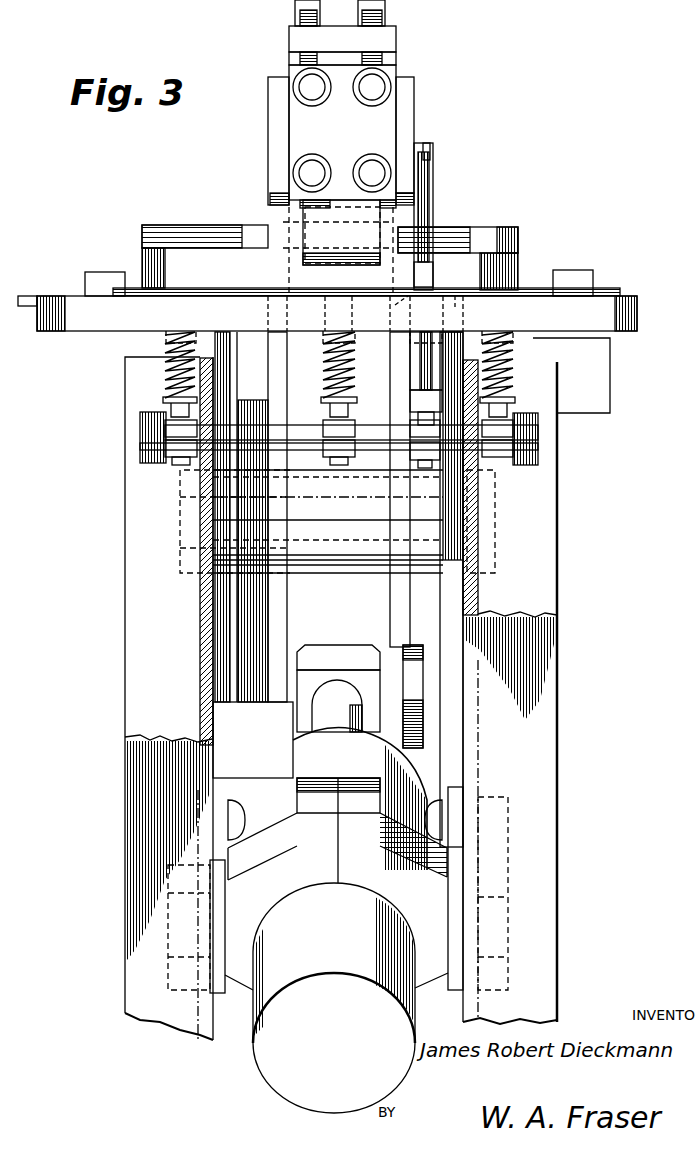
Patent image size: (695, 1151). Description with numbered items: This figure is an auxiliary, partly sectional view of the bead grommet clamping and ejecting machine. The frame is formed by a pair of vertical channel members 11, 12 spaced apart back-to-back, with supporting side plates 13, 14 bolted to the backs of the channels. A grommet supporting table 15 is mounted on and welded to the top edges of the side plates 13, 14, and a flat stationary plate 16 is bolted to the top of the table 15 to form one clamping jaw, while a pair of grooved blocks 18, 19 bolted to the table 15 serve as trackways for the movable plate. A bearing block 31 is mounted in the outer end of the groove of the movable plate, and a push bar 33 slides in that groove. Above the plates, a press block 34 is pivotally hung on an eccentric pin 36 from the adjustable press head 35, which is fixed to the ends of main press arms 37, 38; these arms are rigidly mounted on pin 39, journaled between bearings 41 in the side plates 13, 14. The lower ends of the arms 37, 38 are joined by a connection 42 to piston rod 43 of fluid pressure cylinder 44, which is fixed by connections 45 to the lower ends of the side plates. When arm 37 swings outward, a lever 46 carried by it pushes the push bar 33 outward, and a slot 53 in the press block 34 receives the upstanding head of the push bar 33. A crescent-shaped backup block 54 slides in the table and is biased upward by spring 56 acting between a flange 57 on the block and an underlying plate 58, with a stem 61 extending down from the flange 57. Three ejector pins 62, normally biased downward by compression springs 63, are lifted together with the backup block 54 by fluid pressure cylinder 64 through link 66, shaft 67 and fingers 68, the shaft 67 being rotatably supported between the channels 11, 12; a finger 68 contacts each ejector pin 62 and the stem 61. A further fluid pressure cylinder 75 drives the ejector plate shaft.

The vertical channel member 11 is at (537, 738).
The vertical channel member 12 is at (150, 760).
The supporting side plate 13 is at (450, 727).
The supporting side plate 14 is at (222, 678).
The grommet supporting table 15 is at (613, 312).
The flat stationary plate 16 is at (127, 292).
The grooved block 18 is at (100, 282).
The grooved block 19 is at (583, 283).
The bearing block 31 is at (425, 280).
The push bar 33 is at (420, 258).
The press block 34 is at (196, 237).
The adjustable press head 35 is at (384, 117).
The pin 36 is at (312, 232).
The main press arm 37 is at (397, 608).
The main press arm 38 is at (277, 613).
The pin 39 is at (483, 513).
The bearing 41 is at (485, 562).
The connection 42 is at (423, 662).
The piston rod 43 is at (338, 692).
The fluid pressure cylinder 44 is at (292, 1040).
The connection 45 is at (490, 860).
The lever 46 is at (427, 172).
The slot 53 is at (432, 258).
The backup block 54 is at (395, 305).
The spring 56 is at (410, 367).
The flange 57 is at (455, 313).
The underlying plate 58 is at (410, 400).
The stem 61 is at (418, 416).
The ejector pin 62 is at (515, 350).
The compression spring 63 is at (515, 378).
The fluid pressure cylinder 64 is at (270, 758).
The link 66 is at (258, 521).
The shaft 67 is at (311, 436).
The finger 68 is at (495, 452).
The fluid pressure cylinder 75 is at (600, 372).